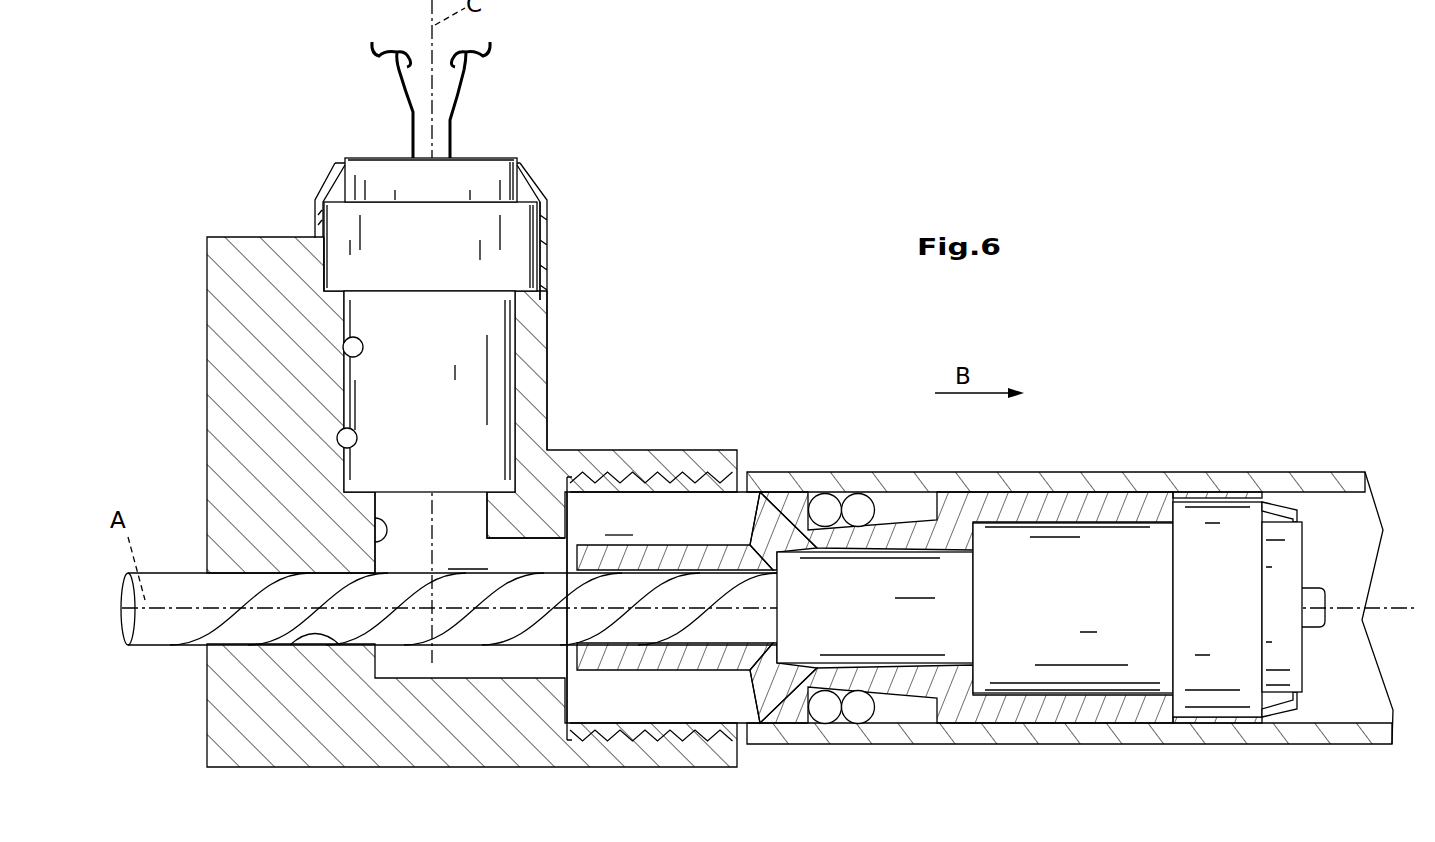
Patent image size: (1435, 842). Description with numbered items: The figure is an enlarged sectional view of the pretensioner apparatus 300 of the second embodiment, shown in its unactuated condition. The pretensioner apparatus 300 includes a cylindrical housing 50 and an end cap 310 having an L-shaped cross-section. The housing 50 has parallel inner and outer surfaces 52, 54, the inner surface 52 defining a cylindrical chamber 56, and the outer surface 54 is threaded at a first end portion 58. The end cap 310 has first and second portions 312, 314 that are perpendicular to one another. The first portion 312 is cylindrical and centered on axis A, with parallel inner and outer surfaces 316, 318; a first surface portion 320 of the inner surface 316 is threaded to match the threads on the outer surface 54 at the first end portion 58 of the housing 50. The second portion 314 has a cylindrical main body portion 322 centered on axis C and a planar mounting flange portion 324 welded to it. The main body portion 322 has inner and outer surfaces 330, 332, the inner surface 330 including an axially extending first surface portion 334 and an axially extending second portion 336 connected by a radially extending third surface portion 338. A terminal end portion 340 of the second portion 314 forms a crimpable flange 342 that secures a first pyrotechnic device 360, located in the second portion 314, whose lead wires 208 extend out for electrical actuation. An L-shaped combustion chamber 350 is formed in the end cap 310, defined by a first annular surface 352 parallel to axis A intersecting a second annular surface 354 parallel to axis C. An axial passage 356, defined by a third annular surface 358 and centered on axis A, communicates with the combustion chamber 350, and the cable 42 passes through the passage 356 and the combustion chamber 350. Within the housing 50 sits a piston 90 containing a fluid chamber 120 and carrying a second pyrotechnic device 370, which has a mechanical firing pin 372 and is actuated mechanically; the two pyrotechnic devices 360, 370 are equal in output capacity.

The cable 42 is at (150, 630).
The cylindrical housing 50 is at (1076, 570).
The inner surface 52 is at (1325, 495).
The outer surface 54 is at (1305, 470).
The cylindrical chamber 56 is at (619, 524).
The first end portion 58 is at (690, 478).
The piston 90 is at (1070, 484).
The fluid chamber 120 is at (975, 608).
The lead wires 208 is at (452, 128).
The pretensioner apparatus 300 is at (753, 272).
The end cap 310 is at (452, 531).
The first portion 312 is at (663, 565).
The second portion 314 is at (530, 340).
The inner surface 316 is at (655, 478).
The outer surface 318 is at (1076, 570).
The first surface portion 320 is at (740, 742).
The main body portion 322 is at (541, 307).
The mounting flange portion 324 is at (225, 395).
The inner surface 330 is at (345, 340).
The outer surface 332 is at (547, 248).
The first surface portion 334 is at (327, 232).
The second portion 336 is at (340, 440).
The third surface portion 338 is at (323, 275).
The terminal end portion 340 is at (322, 200).
The crimpable flange 342 is at (545, 187).
The L-shaped combustion chamber 350 is at (632, 607).
The first annular surface 352 is at (520, 540).
The second annular surface 354 is at (372, 518).
The axial passage 356 is at (322, 633).
The third annular surface 358 is at (358, 573).
The first pyrotechnic device 360 is at (436, 206).
The second pyrotechnic device 370 is at (1312, 564).
The mechanical firing pin 372 is at (1312, 622).